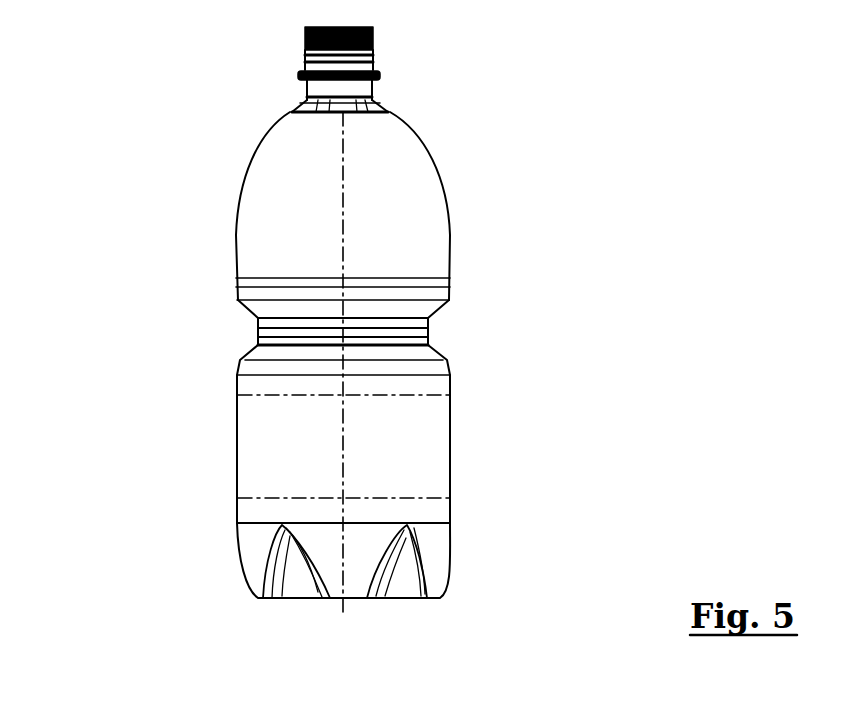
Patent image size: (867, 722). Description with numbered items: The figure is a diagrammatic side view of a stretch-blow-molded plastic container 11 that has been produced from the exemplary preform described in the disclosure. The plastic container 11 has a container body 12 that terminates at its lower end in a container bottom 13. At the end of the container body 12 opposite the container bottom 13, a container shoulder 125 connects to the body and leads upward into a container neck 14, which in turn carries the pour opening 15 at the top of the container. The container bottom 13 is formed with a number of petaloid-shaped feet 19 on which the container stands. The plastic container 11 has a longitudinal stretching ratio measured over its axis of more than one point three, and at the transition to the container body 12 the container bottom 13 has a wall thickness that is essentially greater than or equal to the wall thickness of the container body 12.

The plastic container 11 is at (296, 340).
The container body 12 is at (450, 418).
The container bottom 13 is at (333, 601).
The container neck 14 is at (373, 48).
The pour opening 15 is at (312, 22).
The petaloid-shaped feet 19 is at (440, 578).
The container shoulder 125 is at (436, 151).